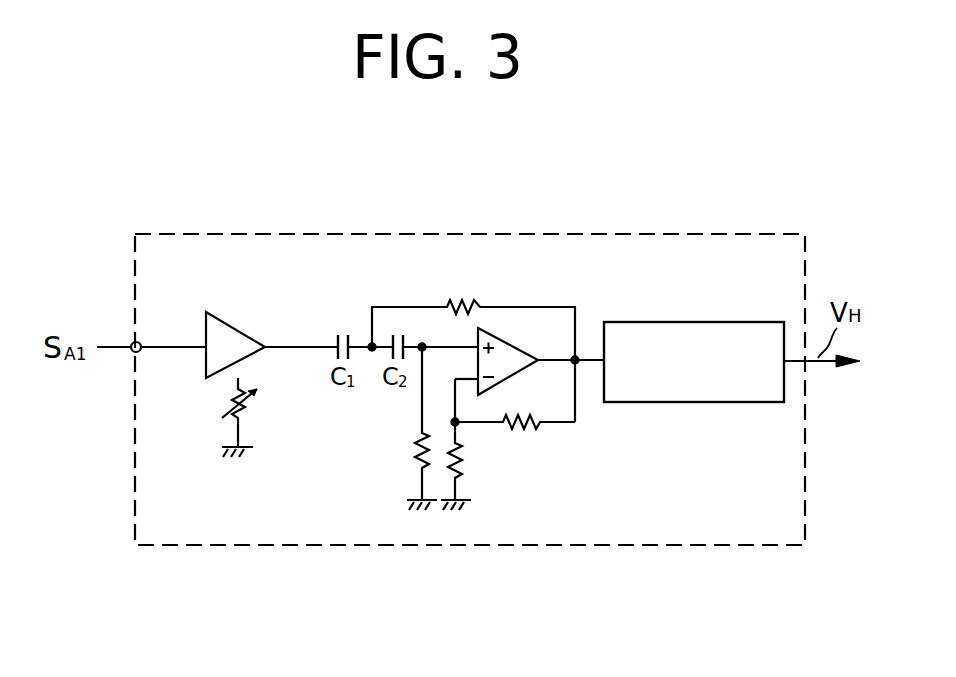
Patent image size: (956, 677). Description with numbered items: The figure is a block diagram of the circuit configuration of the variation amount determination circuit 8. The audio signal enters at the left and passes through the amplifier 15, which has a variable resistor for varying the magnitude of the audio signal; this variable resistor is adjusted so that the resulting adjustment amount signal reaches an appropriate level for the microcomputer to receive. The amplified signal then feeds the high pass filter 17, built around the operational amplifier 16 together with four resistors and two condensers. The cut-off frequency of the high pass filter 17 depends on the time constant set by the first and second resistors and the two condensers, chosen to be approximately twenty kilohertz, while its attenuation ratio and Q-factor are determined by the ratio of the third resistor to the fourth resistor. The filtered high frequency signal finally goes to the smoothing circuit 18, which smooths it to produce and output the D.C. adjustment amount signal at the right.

The variation amount determination circuit 8 is at (450, 234).
The amplifier 15 is at (240, 324).
The operational amplifier 16 is at (507, 338).
The high pass filter 17 is at (507, 377).
The smoothing circuit 18 is at (648, 323).